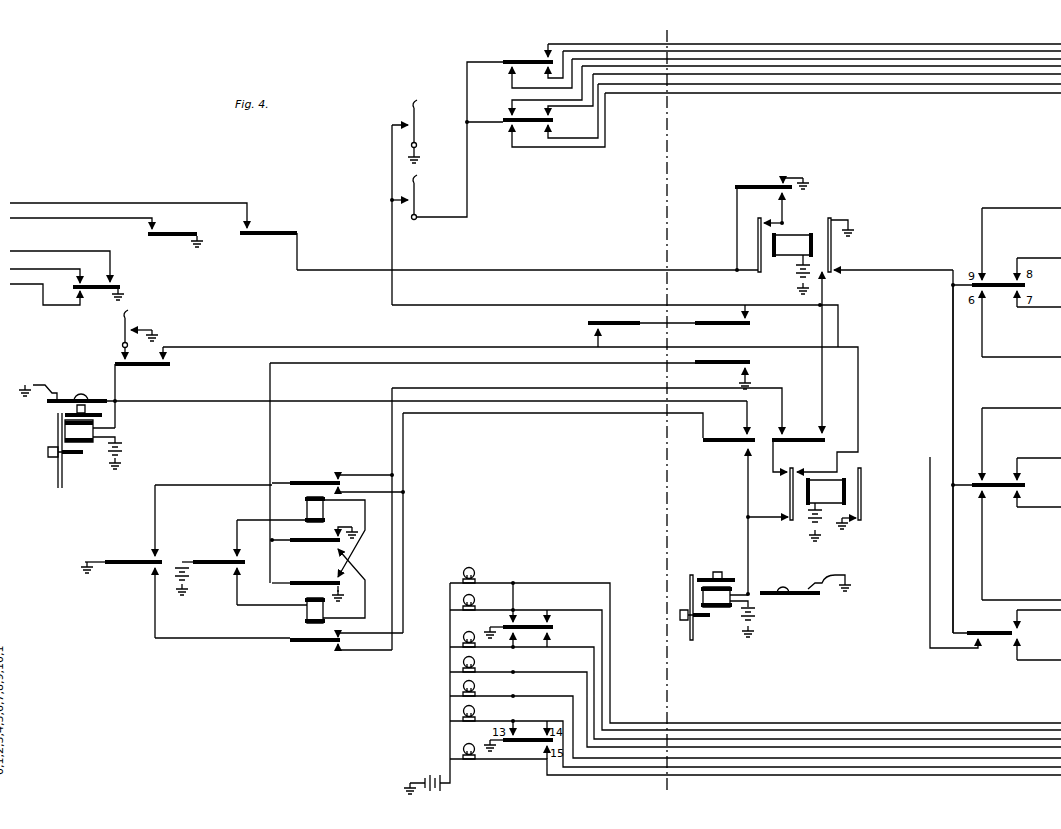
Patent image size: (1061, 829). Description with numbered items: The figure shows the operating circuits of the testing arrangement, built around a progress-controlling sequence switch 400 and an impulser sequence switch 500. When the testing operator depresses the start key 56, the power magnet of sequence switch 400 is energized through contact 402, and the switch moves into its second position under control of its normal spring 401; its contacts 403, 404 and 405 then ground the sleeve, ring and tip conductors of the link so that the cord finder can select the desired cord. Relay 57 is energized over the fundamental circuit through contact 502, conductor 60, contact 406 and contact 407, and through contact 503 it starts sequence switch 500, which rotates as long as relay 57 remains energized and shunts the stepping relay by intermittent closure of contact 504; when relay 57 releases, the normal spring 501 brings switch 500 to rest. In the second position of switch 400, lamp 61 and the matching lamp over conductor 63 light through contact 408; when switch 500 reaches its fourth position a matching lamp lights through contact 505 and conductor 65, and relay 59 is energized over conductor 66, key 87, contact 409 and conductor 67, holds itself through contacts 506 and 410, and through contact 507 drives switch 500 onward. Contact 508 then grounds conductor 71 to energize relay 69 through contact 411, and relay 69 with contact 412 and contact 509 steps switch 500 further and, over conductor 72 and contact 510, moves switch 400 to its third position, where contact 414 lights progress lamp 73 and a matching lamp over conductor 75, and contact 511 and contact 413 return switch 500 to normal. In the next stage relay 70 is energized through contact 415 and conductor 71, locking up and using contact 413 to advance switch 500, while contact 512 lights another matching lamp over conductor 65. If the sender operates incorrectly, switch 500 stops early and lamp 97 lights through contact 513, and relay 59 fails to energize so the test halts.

The progress-controlling sequence switch 400 is at (62, 430).
The normal spring 401 is at (47, 398).
The contact 402 is at (155, 363).
The contact 403 is at (83, 297).
The contact 404 is at (86, 282).
The contact 405 is at (113, 280).
The contact 406 is at (247, 226).
The contact 407 is at (150, 233).
The contact 408 is at (502, 620).
The contact 409 is at (508, 130).
The contact 410 is at (590, 329).
The contact 411 is at (239, 560).
The contact 412 is at (158, 558).
The contact 413 is at (160, 572).
The contact 414 is at (545, 620).
The contact 415 is at (240, 572).
The start key 56 is at (122, 328).
The relay 57 is at (795, 242).
The relay 59 is at (852, 492).
The conductor 60 is at (553, 270).
The lamp 61 is at (475, 574).
The conductor 63 is at (748, 723).
The conductor 65 is at (953, 372).
The conductor 66 is at (510, 301).
The conductor 67 is at (979, 93).
The relay 69 is at (307, 502).
The relay 70 is at (307, 613).
The conductor 71 is at (270, 374).
The conductor 72 is at (240, 401).
The progress lamp 73 is at (476, 605).
The conductor 75 is at (800, 730).
The key 87 is at (418, 204).
The lamp 97 is at (418, 114).
The impulser sequence switch 500 is at (722, 612).
The normal spring 501 is at (806, 588).
The contact 502 is at (794, 191).
The contact 503 is at (830, 436).
The contact 504 is at (790, 180).
The contact 505 is at (1012, 480).
The contact 506 is at (752, 316).
The contact 507 is at (975, 645).
The contact 508 is at (752, 368).
The contact 509 is at (743, 462).
The contact 510 is at (747, 432).
The contact 511 is at (787, 432).
The contact 512 is at (986, 497).
The contact 513 is at (1014, 498).